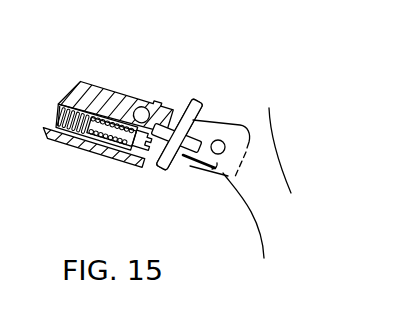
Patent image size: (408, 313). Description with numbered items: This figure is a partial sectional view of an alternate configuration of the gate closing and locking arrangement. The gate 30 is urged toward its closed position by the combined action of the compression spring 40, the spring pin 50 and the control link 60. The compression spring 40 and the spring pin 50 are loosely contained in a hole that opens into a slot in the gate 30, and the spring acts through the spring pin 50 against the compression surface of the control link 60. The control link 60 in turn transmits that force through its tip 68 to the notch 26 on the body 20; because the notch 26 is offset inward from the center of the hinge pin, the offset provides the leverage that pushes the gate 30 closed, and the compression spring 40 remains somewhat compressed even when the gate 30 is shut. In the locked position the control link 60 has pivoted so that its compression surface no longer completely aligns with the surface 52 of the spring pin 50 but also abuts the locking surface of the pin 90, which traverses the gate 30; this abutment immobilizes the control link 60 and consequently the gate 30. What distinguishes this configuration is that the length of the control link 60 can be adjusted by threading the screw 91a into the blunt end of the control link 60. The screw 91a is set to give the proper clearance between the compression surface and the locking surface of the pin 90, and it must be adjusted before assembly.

The body 20 is at (269, 108).
The notch 26 is at (236, 170).
The gate 30 is at (72, 133).
The compression spring 40 is at (98, 107).
The spring pin 50 is at (100, 130).
The surface 52 is at (118, 146).
The control link 60 is at (177, 162).
The tip 68 is at (200, 167).
The pin 90 is at (133, 92).
The screw 91a is at (180, 107).